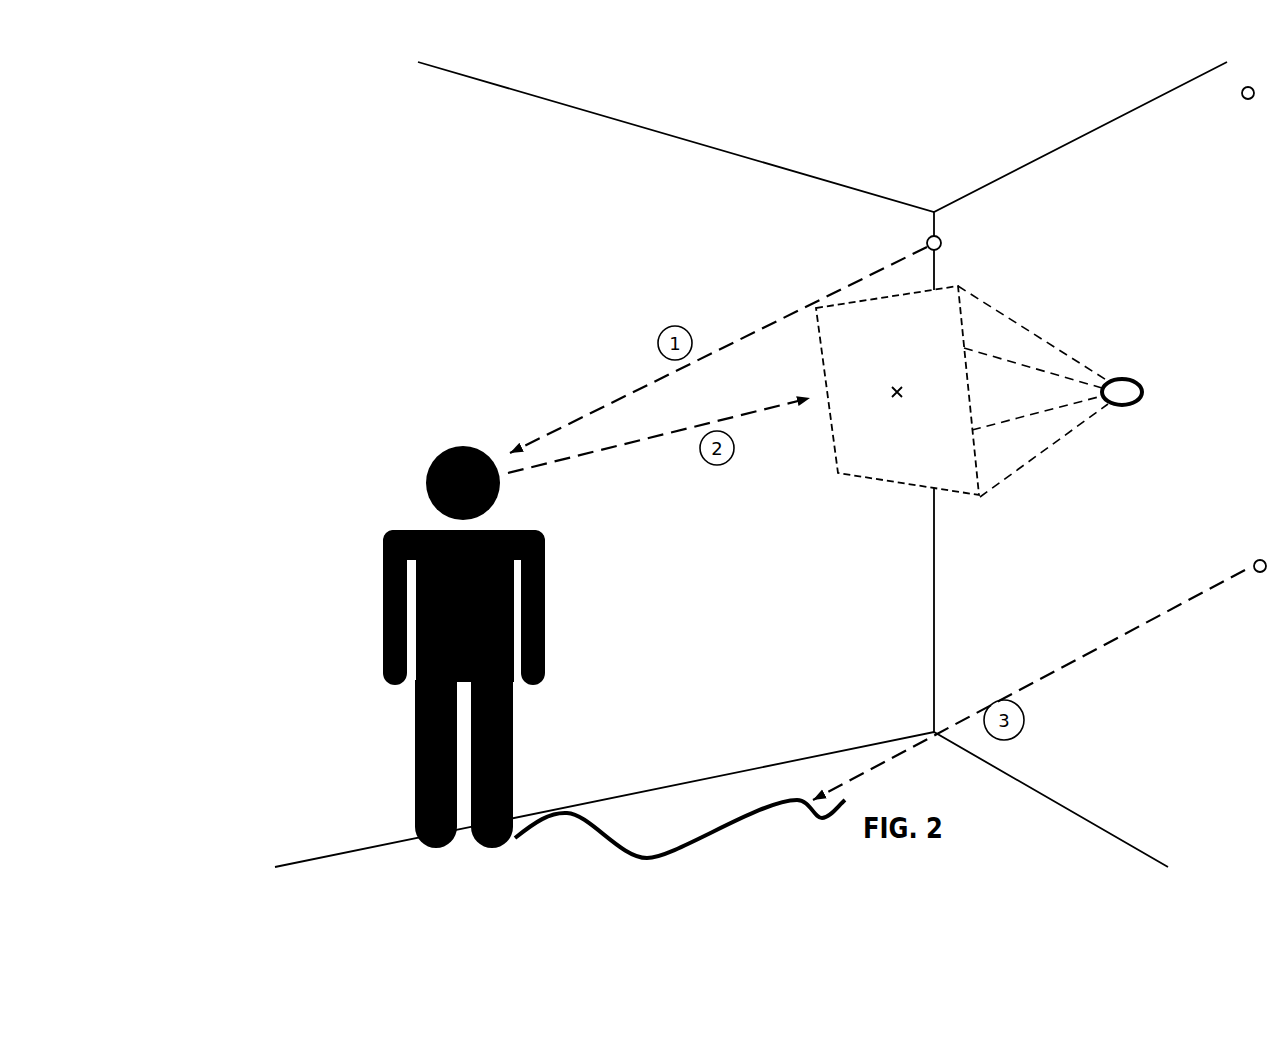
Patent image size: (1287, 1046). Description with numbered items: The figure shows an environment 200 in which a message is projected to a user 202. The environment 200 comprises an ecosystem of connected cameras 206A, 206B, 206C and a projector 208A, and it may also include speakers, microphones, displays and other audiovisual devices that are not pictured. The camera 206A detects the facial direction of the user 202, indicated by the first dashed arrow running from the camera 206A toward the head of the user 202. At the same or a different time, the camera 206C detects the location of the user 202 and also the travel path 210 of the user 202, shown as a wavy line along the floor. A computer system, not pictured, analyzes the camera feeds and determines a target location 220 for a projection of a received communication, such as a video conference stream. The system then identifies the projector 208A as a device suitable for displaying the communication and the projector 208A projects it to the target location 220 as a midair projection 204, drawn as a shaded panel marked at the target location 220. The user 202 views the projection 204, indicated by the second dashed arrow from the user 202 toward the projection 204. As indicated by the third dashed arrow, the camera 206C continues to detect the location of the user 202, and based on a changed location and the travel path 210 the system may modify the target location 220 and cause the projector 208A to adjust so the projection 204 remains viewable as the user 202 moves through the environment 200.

The environment 200 is at (366, 197).
The user 202 is at (448, 444).
The midair projection 204 is at (942, 288).
The camera 206A is at (941, 244).
The camera 206B is at (1243, 97).
The camera 206C is at (1257, 572).
The projector 208A is at (1143, 391).
The travel path 210 is at (608, 834).
The target location 220 is at (924, 388).